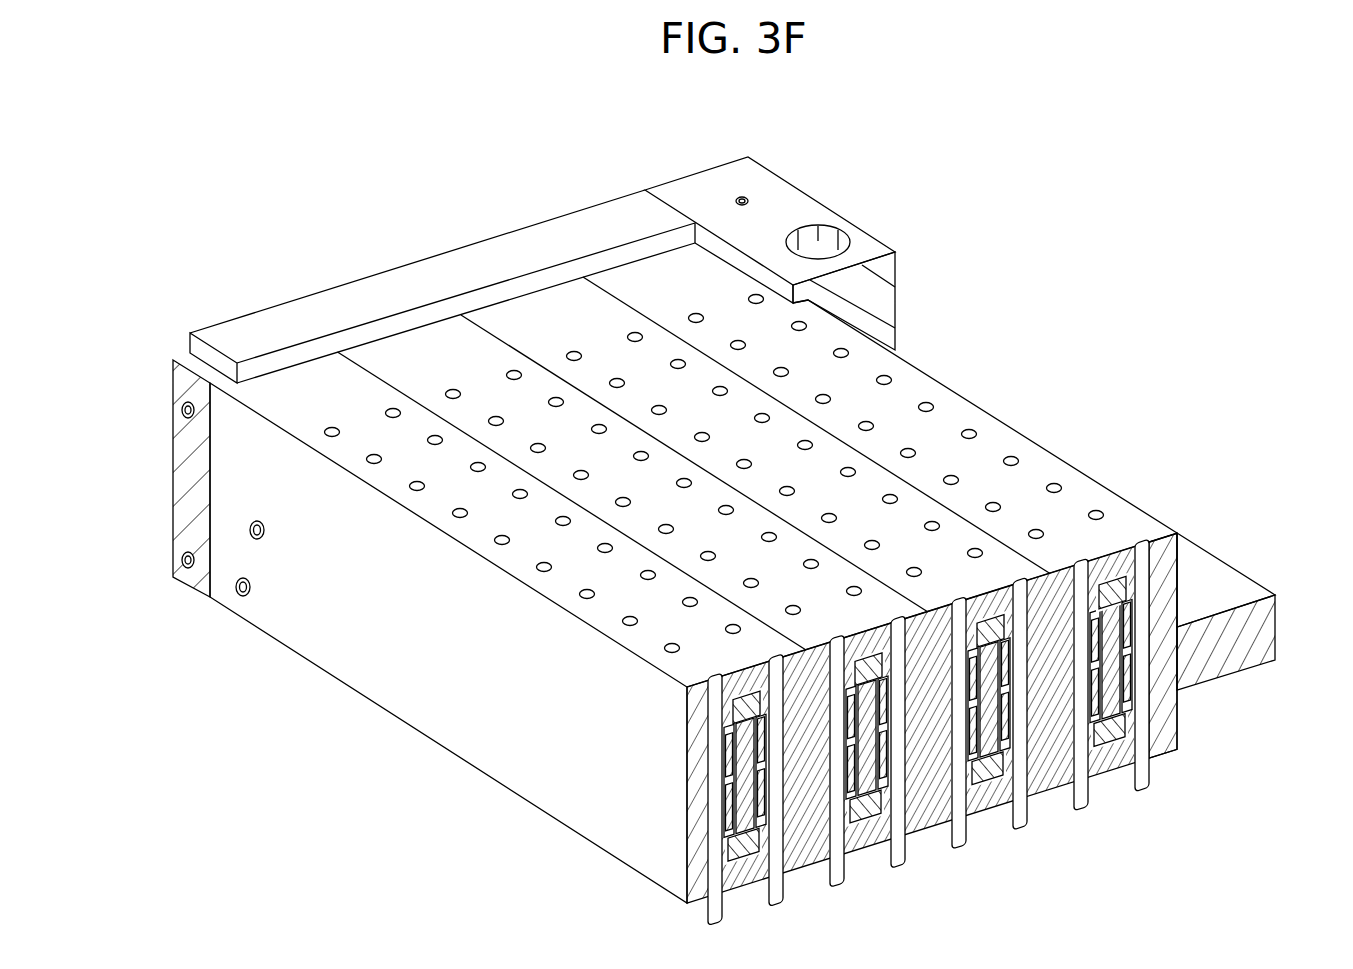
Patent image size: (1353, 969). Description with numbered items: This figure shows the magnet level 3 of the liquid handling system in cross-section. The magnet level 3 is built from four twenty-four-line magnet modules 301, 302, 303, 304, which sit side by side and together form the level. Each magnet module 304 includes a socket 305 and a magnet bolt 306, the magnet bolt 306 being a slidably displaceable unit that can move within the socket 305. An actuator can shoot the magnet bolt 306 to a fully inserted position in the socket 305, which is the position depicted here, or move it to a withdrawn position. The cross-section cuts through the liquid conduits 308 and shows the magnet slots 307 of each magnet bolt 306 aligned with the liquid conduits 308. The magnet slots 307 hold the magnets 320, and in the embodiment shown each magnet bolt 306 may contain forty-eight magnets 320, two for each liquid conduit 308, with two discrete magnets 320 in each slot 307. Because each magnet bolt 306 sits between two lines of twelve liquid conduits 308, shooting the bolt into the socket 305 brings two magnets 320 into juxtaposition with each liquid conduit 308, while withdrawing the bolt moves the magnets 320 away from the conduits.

The magnet level 3 is at (1093, 228).
The magnet module 301 is at (315, 393).
The magnet module 302 is at (427, 353).
The magnet module 303 is at (562, 320).
The magnet module 304 is at (655, 283).
The socket 305 is at (1180, 722).
The magnet bolt 306 is at (1120, 570).
The magnet slot 307 is at (1125, 710).
The liquid conduit 308 is at (1090, 797).
The magnet 320 is at (727, 762).